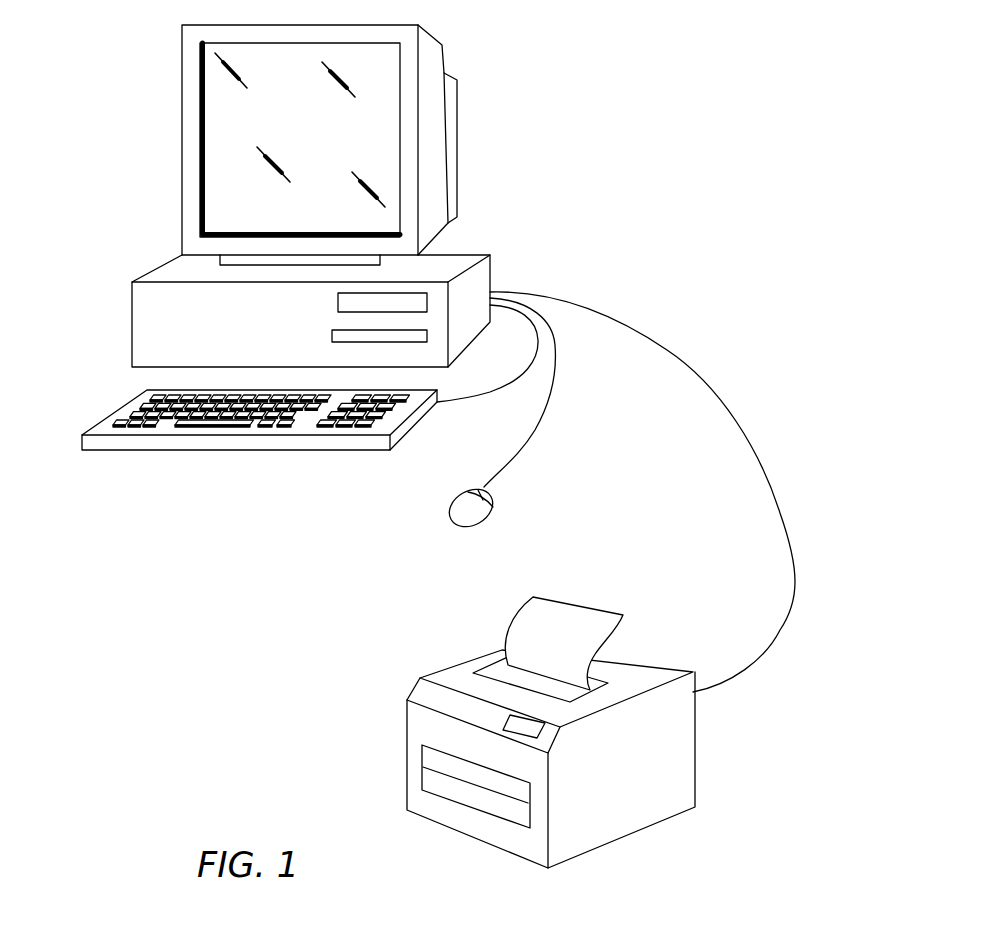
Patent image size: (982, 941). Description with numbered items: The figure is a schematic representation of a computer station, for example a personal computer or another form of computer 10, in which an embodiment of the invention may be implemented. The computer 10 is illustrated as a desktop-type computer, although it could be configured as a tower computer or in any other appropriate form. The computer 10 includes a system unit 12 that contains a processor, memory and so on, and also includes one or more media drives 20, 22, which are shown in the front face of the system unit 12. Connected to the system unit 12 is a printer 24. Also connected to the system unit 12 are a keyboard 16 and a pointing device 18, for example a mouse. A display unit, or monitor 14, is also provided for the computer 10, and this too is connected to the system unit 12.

The computer 10 is at (595, 101).
The system unit 12 is at (132, 307).
The monitor 14 is at (182, 127).
The keyboard 16 is at (82, 443).
The pointing device 18 is at (493, 507).
The media drive 20 is at (338, 302).
The media drive 22 is at (332, 335).
The printer 24 is at (406, 734).